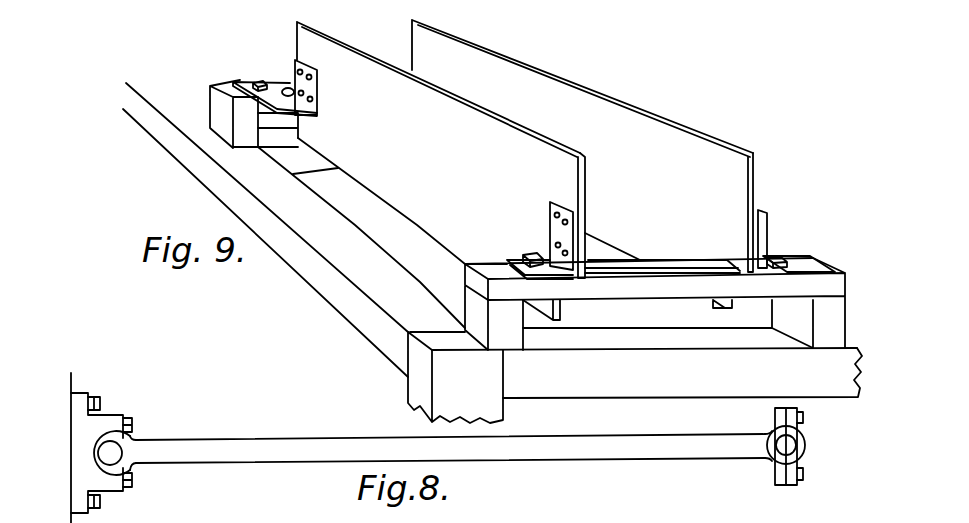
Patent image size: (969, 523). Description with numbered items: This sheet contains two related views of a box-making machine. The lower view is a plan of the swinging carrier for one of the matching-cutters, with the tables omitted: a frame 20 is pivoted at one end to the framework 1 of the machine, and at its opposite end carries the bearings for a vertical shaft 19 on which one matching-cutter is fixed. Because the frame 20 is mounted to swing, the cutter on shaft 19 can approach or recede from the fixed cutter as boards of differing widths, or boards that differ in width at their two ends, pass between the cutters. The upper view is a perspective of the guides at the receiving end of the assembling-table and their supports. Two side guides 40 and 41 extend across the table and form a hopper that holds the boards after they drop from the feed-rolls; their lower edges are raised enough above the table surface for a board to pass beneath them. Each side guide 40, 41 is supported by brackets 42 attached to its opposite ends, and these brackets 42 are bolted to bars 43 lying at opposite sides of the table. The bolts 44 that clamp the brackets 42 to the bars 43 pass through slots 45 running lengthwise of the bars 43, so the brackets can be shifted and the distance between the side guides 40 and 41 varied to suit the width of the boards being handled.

In FIG. 9, the framework 1 is at (303, 273).
In FIG. 8, the framework 1 is at (63, 387).
In FIG. 8, the shaft 19 is at (797, 446).
In FIG. 8, the frame 20 is at (308, 469).
In FIG. 9, the side guide 40 is at (581, 75).
In FIG. 9, the side guide 41 is at (486, 102).
In FIG. 9, the bracket 42 is at (312, 111).
In FIG. 9, the bar 43 is at (212, 93).
In FIG. 9, the bolt 44 is at (260, 74).
In FIG. 9, the slot 45 is at (286, 82).